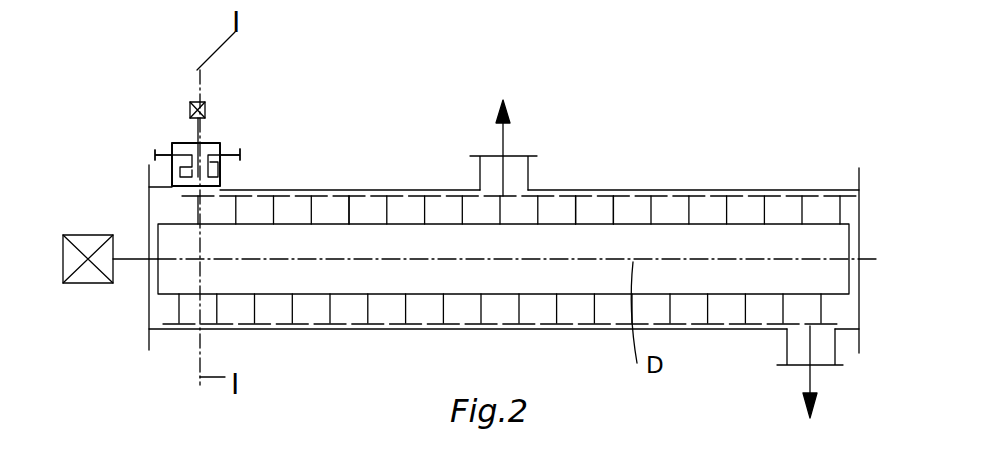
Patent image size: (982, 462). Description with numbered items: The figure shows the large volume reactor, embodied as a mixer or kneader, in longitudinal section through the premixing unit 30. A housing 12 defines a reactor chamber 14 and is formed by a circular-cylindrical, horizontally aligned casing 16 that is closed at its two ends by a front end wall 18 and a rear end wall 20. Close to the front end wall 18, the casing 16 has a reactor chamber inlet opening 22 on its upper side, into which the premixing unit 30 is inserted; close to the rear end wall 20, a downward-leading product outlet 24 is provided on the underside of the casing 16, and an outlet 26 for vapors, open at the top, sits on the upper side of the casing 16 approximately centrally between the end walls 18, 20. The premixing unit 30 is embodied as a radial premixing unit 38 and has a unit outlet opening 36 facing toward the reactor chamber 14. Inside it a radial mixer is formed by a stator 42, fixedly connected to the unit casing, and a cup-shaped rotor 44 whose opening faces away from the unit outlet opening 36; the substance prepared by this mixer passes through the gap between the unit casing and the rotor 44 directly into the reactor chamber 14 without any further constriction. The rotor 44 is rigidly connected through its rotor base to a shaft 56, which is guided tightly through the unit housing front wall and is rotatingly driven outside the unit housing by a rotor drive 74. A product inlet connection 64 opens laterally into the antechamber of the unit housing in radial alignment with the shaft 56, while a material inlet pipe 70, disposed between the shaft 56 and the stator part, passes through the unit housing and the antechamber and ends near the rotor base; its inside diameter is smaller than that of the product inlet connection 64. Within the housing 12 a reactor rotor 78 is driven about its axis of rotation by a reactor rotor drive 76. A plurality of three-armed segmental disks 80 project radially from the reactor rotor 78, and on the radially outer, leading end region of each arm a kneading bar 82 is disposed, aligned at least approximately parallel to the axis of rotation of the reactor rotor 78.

The housing 12 is at (705, 191).
The reactor chamber 14 is at (738, 215).
The casing 16 is at (797, 190).
The front end wall 18 is at (147, 297).
The rear end wall 20 is at (860, 208).
The reactor chamber inlet opening 22 is at (180, 190).
The product outlet 24 is at (802, 353).
The outlet for vapors 26 is at (518, 170).
The premixing unit 30 is at (180, 133).
The unit outlet opening 36 is at (196, 164).
The radial premixing unit 38 is at (196, 164).
The stator 42 is at (240, 166).
The rotor 44 is at (223, 181).
The shaft 56 is at (200, 124).
The product inlet connection 64 is at (227, 153).
The material inlet pipe 70 is at (172, 150).
The rotor drive 74 is at (202, 98).
The reactor rotor drive 76 is at (85, 283).
The reactor rotor 78 is at (378, 273).
The segmental disk 80 is at (349, 206).
The kneading bar 82 is at (603, 195).